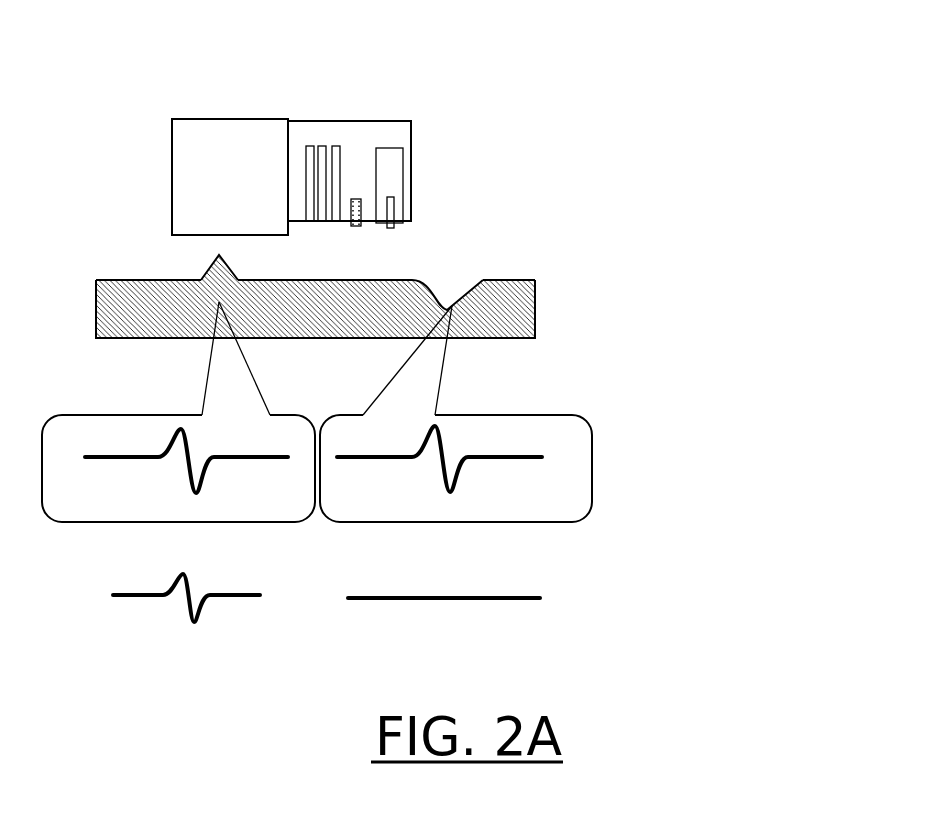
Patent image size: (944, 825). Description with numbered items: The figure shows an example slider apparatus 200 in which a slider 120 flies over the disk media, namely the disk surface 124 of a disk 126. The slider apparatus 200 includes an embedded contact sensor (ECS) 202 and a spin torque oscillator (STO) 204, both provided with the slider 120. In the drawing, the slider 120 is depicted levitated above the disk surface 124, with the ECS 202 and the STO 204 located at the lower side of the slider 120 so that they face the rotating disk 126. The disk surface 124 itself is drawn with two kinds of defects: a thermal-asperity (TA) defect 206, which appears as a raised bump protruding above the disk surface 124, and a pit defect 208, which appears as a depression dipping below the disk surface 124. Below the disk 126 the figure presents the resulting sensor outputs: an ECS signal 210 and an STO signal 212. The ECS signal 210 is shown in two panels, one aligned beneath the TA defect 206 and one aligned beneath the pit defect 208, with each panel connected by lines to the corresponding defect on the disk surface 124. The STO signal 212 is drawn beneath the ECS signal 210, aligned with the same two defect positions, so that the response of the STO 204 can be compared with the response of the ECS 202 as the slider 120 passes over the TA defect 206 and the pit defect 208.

The slider apparatus 200 is at (504, 43).
The slider 120 is at (391, 121).
The embedded contact sensor (ECS) 202 is at (358, 199).
The spin torque oscillator (STO) 204 is at (391, 197).
The disk surface 124 is at (520, 280).
The disk 126 is at (503, 327).
The thermal-asperity (TA) defect 206 is at (223, 262).
The pit defect 208 is at (451, 308).
The ECS signal 210 is at (775, 472).
The STO signal 212 is at (763, 612).